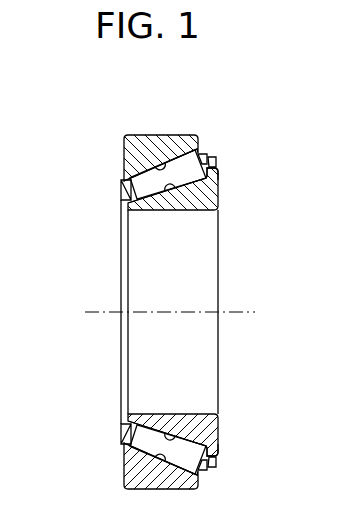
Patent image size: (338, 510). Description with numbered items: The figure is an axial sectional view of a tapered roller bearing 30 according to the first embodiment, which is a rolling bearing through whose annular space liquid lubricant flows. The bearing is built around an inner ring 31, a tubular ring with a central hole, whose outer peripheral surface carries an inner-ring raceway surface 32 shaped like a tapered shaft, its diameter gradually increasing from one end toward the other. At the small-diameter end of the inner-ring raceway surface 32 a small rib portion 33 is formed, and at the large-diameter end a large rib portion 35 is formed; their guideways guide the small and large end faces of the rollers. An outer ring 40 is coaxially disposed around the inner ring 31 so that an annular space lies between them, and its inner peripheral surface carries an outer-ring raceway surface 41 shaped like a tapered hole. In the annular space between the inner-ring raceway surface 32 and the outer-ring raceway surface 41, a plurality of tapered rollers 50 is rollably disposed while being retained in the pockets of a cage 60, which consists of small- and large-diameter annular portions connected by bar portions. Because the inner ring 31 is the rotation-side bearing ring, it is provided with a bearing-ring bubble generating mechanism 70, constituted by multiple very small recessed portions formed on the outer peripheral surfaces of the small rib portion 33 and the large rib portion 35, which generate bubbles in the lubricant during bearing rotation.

The tapered roller bearing 30 is at (118, 123).
The inner ring 31 is at (193, 212).
The inner-ring raceway surface 32 is at (178, 192).
The small rib portion 33 is at (120, 198).
The large rib portion 35 is at (218, 182).
The outer ring 40 is at (175, 132).
The outer-ring raceway surface 41 is at (156, 160).
The tapered roller 50 is at (148, 163).
The cage 60 is at (205, 153).
The bearing-ring bubble generating mechanism 70 is at (213, 157).